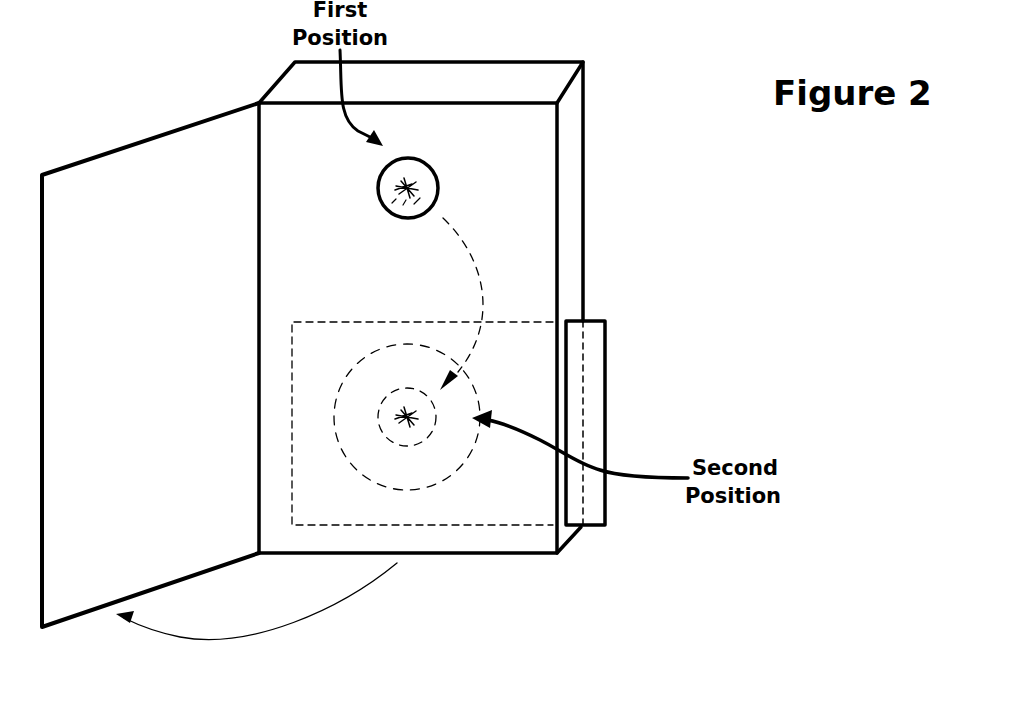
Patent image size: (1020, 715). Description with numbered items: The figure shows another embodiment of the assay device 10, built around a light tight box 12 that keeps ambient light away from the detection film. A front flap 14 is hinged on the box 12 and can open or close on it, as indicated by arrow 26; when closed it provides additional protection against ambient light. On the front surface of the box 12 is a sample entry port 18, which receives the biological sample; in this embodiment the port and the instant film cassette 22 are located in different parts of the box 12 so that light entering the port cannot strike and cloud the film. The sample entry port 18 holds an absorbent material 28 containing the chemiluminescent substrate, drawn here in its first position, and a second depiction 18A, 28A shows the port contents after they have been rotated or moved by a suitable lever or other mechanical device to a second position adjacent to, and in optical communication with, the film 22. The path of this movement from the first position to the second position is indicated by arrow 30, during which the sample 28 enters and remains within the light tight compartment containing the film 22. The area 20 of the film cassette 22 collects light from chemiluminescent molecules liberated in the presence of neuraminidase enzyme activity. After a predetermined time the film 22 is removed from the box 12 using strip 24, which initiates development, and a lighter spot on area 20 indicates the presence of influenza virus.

The device 10 is at (740, 280).
The light tight box 12 is at (400, 62).
The front flap 14 is at (132, 143).
The sample entry port 18 is at (422, 157).
The fastener in second position 18A is at (432, 433).
The area of film cassette 20 is at (417, 488).
The instant film cassette 22 is at (533, 320).
The strip 24 is at (607, 398).
The arrow 26 is at (256, 622).
The absorbent material 28 is at (408, 190).
The mark at second position 28A is at (405, 415).
The arrow 30 is at (463, 238).